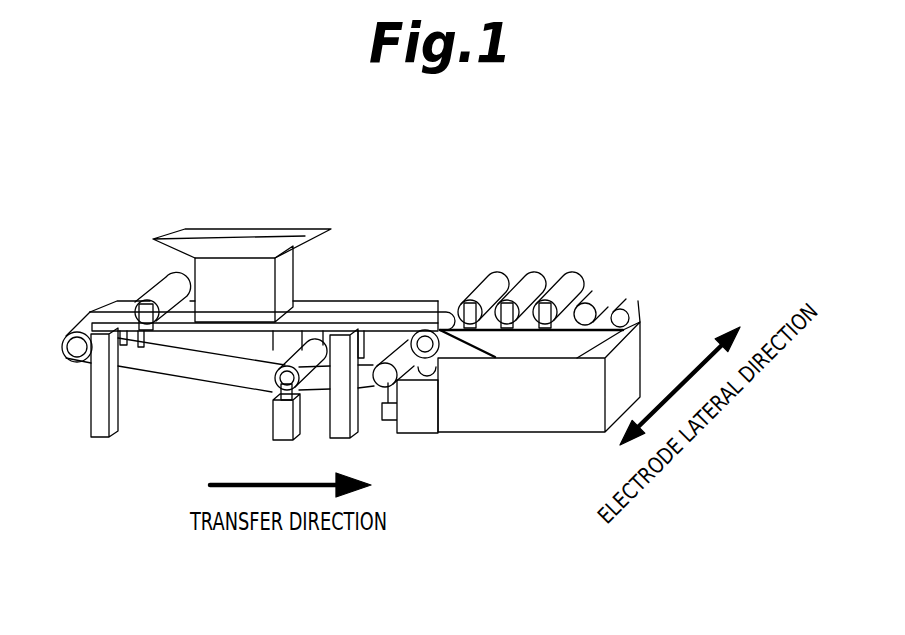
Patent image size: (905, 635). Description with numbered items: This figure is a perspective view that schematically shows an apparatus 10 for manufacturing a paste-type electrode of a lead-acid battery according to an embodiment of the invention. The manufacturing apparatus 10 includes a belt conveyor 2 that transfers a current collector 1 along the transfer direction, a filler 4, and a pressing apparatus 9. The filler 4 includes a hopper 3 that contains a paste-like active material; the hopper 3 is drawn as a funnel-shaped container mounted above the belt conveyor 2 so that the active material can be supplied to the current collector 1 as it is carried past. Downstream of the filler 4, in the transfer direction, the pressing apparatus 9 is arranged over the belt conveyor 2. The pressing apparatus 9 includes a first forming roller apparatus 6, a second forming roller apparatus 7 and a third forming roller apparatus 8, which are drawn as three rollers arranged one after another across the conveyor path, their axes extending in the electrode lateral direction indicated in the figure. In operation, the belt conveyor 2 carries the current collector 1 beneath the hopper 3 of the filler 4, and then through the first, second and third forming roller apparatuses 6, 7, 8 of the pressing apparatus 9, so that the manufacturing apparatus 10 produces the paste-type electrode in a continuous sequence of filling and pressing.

The current collector 1 is at (125, 313).
The belt conveyor 2 is at (86, 313).
The hopper 3 is at (213, 235).
The filler 4 is at (288, 283).
The first forming roller apparatus 6 is at (484, 275).
The second forming roller apparatus 7 is at (521, 273).
The third forming roller apparatus 8 is at (561, 275).
The pressing apparatus 9 is at (462, 213).
The manufacturing apparatus 10 is at (336, 207).